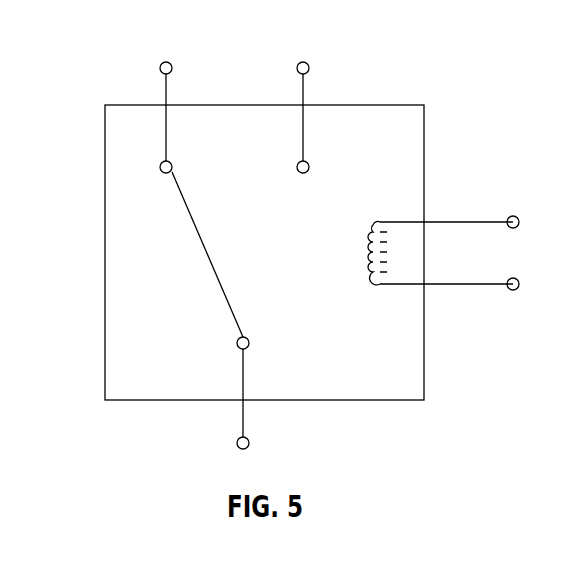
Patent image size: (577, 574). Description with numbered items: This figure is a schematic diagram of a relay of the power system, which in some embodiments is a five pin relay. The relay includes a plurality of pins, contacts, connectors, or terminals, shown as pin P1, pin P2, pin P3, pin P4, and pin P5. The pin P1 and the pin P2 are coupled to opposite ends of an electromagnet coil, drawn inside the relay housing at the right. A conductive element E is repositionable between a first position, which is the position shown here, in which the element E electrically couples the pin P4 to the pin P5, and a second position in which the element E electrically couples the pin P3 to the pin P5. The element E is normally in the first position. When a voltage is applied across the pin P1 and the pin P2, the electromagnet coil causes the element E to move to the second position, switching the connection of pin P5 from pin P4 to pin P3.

The pin P1 is at (531, 225).
The pin P2 is at (531, 287).
The pin P3 is at (321, 110).
The pin P4 is at (185, 110).
The pin P5 is at (259, 399).
The conductive element E is at (213, 271).